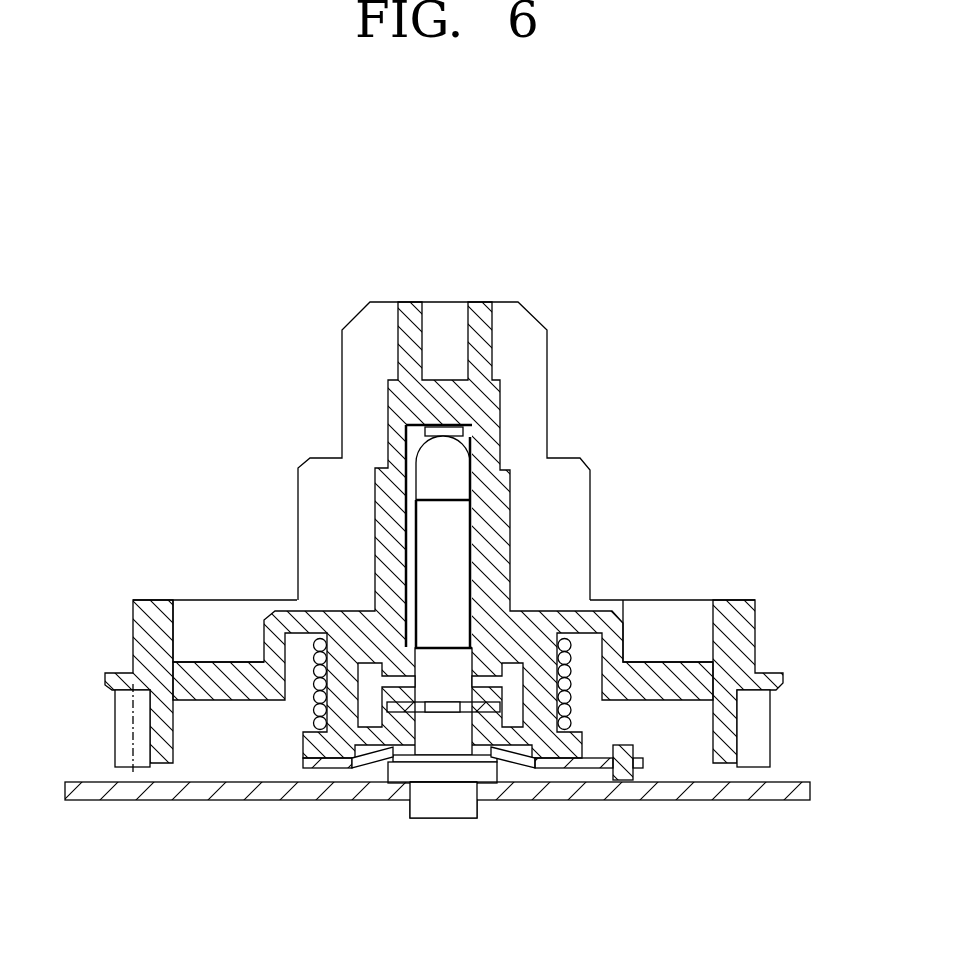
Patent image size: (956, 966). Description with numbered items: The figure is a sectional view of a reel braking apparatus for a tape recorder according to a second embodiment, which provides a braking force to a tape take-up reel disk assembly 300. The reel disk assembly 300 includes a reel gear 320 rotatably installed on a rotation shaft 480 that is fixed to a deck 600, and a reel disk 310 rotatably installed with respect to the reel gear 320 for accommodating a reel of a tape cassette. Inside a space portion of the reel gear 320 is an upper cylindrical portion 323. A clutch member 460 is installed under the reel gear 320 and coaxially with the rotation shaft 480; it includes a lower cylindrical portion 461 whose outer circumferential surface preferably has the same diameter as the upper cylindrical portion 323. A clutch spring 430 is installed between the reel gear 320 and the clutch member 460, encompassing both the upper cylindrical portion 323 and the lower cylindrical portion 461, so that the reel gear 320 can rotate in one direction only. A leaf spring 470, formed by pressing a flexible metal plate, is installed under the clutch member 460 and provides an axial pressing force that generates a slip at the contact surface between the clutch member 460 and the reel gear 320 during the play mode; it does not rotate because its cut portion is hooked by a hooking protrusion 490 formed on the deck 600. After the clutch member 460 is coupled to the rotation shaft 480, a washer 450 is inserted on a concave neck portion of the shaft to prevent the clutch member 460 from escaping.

The reel disk assembly 300 is at (558, 320).
The reel disk 310 is at (572, 500).
The reel gear 320 is at (760, 725).
The upper cylindrical portion 323 is at (540, 690).
The clutch spring 430 is at (312, 710).
The washer 450 is at (497, 700).
The clutch member 460 is at (300, 757).
The lower cylindrical portion 461 is at (345, 700).
The leaf spring 470 is at (568, 768).
The rotation shaft 480 is at (457, 525).
The hooking protrusion 490 is at (628, 772).
The deck 600 is at (765, 802).